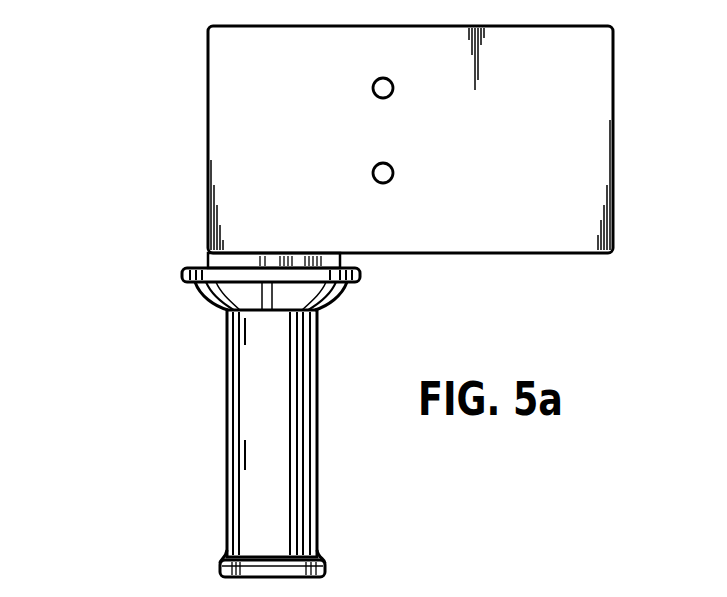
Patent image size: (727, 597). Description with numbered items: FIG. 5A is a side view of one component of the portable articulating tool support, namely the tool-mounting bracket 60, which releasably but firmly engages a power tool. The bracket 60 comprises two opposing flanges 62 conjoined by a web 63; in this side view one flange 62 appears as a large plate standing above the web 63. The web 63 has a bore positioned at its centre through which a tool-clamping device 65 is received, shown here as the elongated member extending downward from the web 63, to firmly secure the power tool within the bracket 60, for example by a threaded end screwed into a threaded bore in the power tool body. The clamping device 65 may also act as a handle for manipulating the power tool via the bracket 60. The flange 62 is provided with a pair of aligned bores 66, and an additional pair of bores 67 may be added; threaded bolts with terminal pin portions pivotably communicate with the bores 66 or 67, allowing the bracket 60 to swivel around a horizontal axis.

The tool-mounting bracket 60 is at (182, 51).
The opposing flange 62 is at (236, 109).
The web 63 is at (210, 262).
The tool-clamping device 65 is at (227, 393).
The aligned bores 66 is at (393, 88).
The additional pair of bores 67 is at (393, 173).